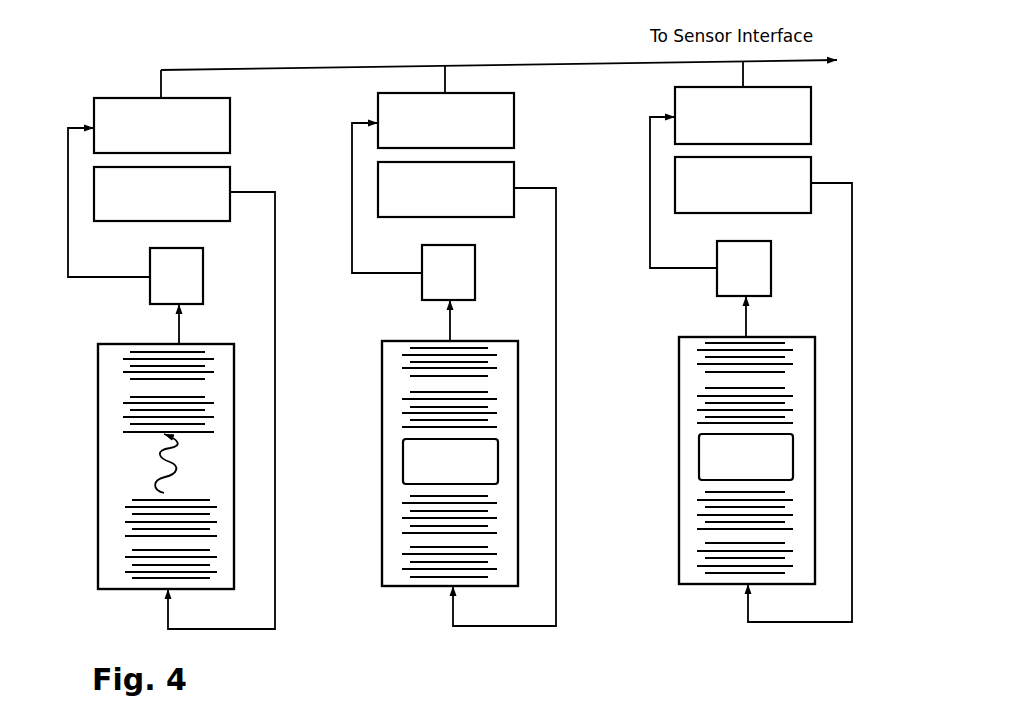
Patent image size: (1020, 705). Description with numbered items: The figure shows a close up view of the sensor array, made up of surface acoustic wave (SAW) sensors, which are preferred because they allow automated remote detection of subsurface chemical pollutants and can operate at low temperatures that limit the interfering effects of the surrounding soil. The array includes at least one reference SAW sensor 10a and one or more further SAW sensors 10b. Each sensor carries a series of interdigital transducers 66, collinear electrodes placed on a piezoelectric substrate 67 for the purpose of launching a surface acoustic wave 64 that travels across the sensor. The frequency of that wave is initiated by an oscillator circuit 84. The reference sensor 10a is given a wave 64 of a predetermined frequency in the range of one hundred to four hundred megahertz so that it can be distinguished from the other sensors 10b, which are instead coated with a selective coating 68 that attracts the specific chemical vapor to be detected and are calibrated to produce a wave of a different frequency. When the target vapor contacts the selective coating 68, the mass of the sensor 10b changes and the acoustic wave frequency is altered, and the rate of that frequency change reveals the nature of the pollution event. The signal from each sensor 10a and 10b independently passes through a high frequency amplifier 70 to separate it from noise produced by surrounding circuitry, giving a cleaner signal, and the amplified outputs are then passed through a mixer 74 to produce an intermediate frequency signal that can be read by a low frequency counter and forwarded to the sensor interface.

The mixer 74 is at (148, 128).
The oscillator circuit 84 is at (148, 194).
The high frequency amplifier 70 is at (162, 280).
The piezoelectric substrate 67 is at (133, 344).
The interdigital transducers 66 is at (132, 379).
The acoustic wave 64 is at (158, 475).
The selective coating 68 is at (437, 458).
The reference SAW sensor 10a is at (131, 592).
The SAW sensor 10b is at (414, 590).